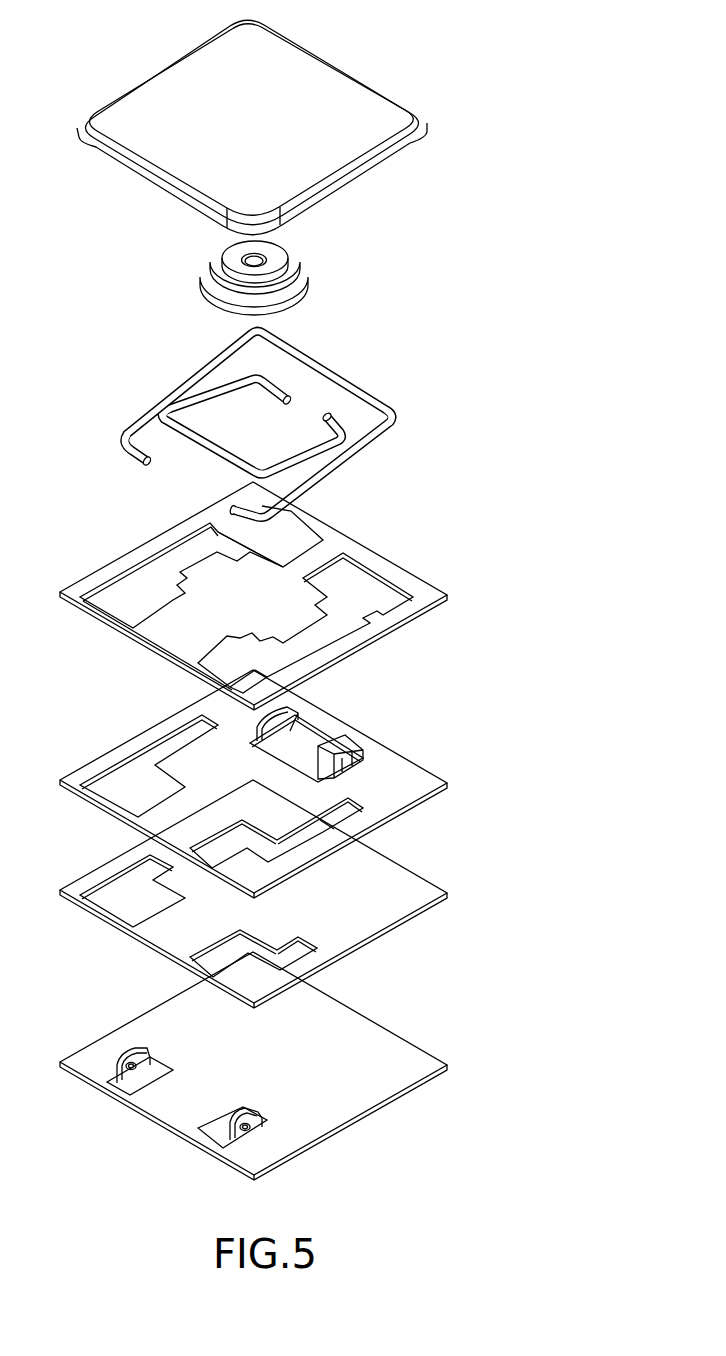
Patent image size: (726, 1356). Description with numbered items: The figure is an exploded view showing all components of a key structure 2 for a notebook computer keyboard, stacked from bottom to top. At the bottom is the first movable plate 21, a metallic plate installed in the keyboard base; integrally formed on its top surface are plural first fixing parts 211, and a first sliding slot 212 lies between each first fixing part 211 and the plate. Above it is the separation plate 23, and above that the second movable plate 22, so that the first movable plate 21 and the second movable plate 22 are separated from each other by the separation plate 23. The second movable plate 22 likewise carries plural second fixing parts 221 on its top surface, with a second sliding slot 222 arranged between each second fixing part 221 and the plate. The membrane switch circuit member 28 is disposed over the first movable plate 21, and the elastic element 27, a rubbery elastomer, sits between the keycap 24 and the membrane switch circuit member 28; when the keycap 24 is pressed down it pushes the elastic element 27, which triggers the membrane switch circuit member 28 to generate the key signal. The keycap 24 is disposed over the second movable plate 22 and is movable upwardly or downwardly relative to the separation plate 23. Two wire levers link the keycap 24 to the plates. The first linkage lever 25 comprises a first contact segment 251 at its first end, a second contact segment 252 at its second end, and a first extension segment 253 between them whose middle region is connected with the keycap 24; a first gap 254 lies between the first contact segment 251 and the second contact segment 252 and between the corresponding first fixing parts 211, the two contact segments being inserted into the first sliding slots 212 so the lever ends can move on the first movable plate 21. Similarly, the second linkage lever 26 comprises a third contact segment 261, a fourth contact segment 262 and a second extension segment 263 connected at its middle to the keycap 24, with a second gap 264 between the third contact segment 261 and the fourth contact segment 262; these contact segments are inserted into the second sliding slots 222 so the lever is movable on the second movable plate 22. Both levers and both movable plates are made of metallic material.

The key structure 2 is at (119, 21).
The first movable plate 21 is at (253, 1079).
The first fixing parts 211 is at (140, 1050).
The first sliding slots 212 is at (131, 1079).
The second movable plate 22 is at (263, 784).
The second fixing parts 221 is at (285, 713).
The second sliding slots 222 is at (363, 755).
The separation plate 23 is at (390, 883).
The keycap 24 is at (346, 79).
The first linkage lever 25 is at (241, 464).
The first contact segment 251 is at (132, 445).
The second contact segment 252 is at (233, 520).
The first extension segment 253 is at (347, 383).
The first gap 254 is at (149, 474).
The second linkage lever 26 is at (293, 420).
The third contact segment 261 is at (273, 392).
The fourth contact segment 262 is at (337, 428).
The second extension segment 263 is at (213, 448).
The second gap 264 is at (296, 414).
The elastic element 27 is at (273, 258).
The membrane switch circuit member 28 is at (168, 640).